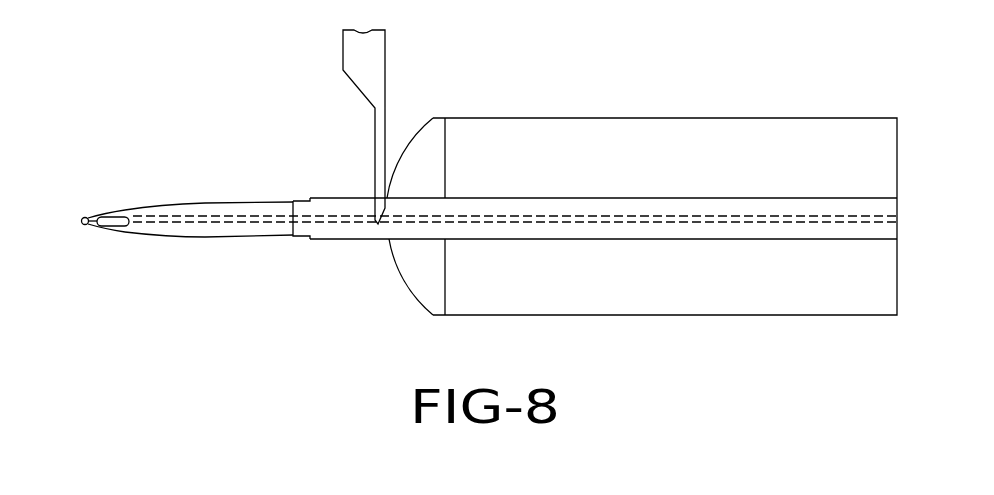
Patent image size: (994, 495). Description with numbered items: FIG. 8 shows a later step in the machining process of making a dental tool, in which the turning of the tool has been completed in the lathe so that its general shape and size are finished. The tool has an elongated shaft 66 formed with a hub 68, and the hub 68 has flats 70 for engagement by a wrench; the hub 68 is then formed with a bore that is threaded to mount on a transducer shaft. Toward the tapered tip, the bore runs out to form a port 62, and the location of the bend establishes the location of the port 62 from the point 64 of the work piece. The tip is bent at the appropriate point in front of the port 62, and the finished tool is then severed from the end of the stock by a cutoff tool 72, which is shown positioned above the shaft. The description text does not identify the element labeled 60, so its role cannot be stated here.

The distal end portion 60 is at (106, 216).
The sensor element 62 is at (125, 223).
The rounded tip 64 is at (82, 218).
The tapered body 66 is at (228, 210).
The tubular sheath 68 is at (332, 235).
The shoulder 70 is at (303, 199).
The needle 72 is at (372, 70).